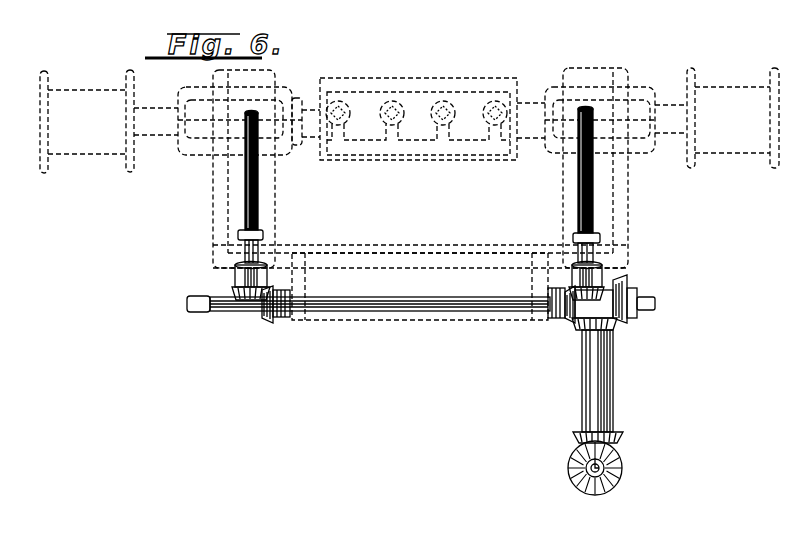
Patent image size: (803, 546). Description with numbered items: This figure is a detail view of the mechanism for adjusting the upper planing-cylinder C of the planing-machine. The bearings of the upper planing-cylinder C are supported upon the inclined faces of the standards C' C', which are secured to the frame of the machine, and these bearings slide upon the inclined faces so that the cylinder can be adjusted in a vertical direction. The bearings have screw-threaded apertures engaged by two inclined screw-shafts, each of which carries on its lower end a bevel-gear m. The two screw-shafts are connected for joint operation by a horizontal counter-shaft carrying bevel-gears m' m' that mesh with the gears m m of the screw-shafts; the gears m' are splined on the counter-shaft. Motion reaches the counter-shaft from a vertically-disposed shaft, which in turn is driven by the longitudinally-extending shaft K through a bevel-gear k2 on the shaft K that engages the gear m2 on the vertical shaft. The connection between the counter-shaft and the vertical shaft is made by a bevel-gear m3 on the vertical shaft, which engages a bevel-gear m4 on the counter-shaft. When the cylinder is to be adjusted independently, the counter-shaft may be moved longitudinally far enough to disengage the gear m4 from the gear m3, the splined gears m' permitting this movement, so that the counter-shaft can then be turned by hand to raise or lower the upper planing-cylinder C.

The upper planing-cylinder C is at (418, 139).
The standards C' is at (412, 194).
The bevel-gears m is at (387, 205).
The bevel-gears m' is at (412, 318).
The gear m2 is at (606, 376).
The bevel-gear m3 is at (617, 326).
The bevel-gear m4 is at (630, 284).
The bevel-gear k2 is at (622, 462).
The longitudinally-extending shaft K is at (622, 470).